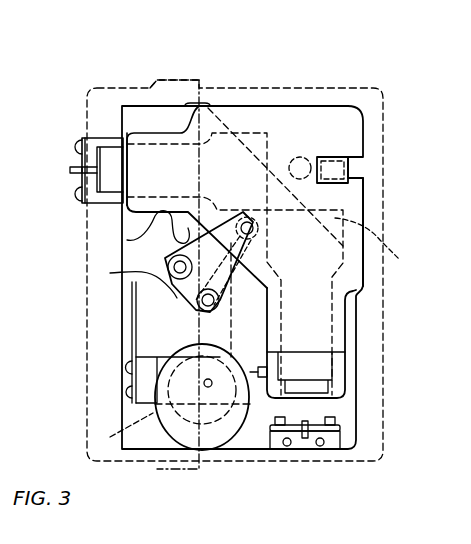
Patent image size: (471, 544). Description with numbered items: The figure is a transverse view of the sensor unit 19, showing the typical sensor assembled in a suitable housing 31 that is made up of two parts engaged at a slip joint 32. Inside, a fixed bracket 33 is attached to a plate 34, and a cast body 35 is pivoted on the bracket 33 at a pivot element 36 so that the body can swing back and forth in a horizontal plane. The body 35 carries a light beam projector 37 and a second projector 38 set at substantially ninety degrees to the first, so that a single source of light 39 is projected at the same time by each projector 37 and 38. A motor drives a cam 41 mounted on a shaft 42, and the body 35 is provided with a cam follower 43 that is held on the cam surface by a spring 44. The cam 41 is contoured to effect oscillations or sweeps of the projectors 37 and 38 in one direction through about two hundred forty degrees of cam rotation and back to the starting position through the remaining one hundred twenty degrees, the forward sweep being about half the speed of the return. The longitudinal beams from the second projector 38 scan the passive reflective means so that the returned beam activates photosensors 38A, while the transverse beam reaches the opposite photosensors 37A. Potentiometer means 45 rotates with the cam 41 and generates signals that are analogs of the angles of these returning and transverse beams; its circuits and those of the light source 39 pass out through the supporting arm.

The sensor unit 19 is at (347, 103).
The housing 31 is at (223, 84).
The slip joint 32 is at (180, 82).
The fixed bracket 33 is at (125, 282).
The plate 34 is at (127, 222).
The cast body 35 is at (365, 204).
The pivot element 36 is at (253, 230).
The light beam projector 37 is at (258, 130).
The photosensors 37A is at (70, 171).
The second projector 38 is at (381, 251).
The photosensors 38A is at (305, 440).
The source of light 39 is at (300, 157).
The cam 41 is at (178, 432).
The shaft 42 is at (212, 386).
The cam follower 43 is at (256, 365).
The spring 44 is at (127, 240).
The potentiometer means 45 is at (110, 437).